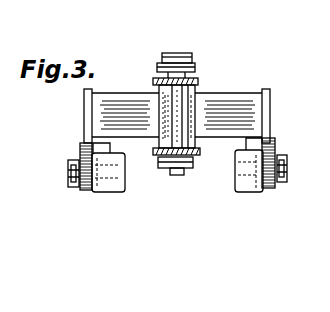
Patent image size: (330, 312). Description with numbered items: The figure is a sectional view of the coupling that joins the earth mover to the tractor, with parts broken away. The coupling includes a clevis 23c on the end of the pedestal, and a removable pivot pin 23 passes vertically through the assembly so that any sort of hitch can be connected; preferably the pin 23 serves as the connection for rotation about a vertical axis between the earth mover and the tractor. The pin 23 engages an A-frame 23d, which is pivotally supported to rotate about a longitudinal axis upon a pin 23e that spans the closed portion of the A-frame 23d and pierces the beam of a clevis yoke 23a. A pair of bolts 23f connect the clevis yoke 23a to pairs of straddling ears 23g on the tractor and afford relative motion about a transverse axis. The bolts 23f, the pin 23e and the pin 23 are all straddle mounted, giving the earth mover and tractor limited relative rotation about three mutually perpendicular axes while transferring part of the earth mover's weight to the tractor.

The removable pivot pin 23 is at (196, 126).
The clevis yoke 23a is at (92, 119).
The clevis 23c is at (199, 81).
The A-frame 23d is at (196, 68).
The pin 23e is at (197, 105).
The bolts 23f is at (68, 172).
The straddling ears 23g is at (80, 146).